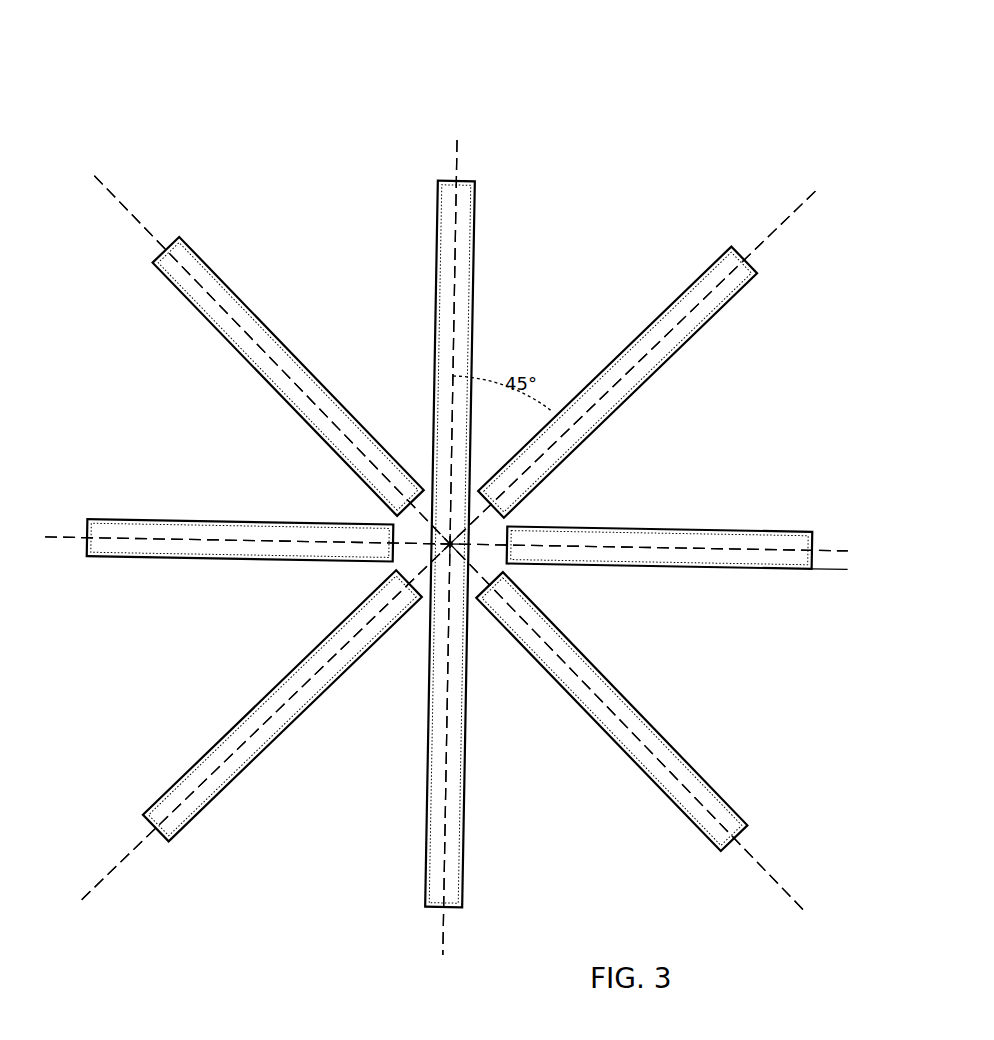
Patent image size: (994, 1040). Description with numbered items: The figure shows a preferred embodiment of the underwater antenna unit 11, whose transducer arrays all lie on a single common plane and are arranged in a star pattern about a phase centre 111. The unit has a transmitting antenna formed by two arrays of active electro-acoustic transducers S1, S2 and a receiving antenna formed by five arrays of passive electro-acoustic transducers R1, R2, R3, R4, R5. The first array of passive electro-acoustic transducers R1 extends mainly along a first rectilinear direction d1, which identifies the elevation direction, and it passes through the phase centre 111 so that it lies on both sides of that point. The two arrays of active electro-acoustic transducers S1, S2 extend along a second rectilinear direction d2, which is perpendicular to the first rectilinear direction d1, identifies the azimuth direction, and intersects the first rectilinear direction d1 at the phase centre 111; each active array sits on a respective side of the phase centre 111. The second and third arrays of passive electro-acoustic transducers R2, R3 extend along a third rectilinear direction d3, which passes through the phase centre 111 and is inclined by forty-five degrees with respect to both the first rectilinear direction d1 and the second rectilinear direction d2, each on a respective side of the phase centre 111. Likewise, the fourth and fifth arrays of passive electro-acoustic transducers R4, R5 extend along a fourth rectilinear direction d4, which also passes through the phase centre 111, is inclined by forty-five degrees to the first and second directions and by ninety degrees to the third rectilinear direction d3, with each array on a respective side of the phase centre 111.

The underwater antenna unit 11 is at (654, 126).
The phase centre 111 is at (455, 547).
The first array of passive electro-acoustic transducers R1 is at (470, 243).
The second array of passive electro-acoustic transducers R2 is at (708, 300).
The third array of passive electro-acoustic transducers R3 is at (245, 752).
The fourth array of passive electro-acoustic transducers R4 is at (264, 340).
The fifth array of passive electro-acoustic transducers R5 is at (650, 744).
The array of active electro-acoustic transducers S1 is at (143, 547).
The array of active electro-acoustic transducers S2 is at (748, 556).
The first rectilinear direction d1 is at (457, 172).
The second rectilinear direction d2 is at (57, 538).
The third rectilinear direction d3 is at (752, 246).
The fourth rectilinear direction d4 is at (128, 210).